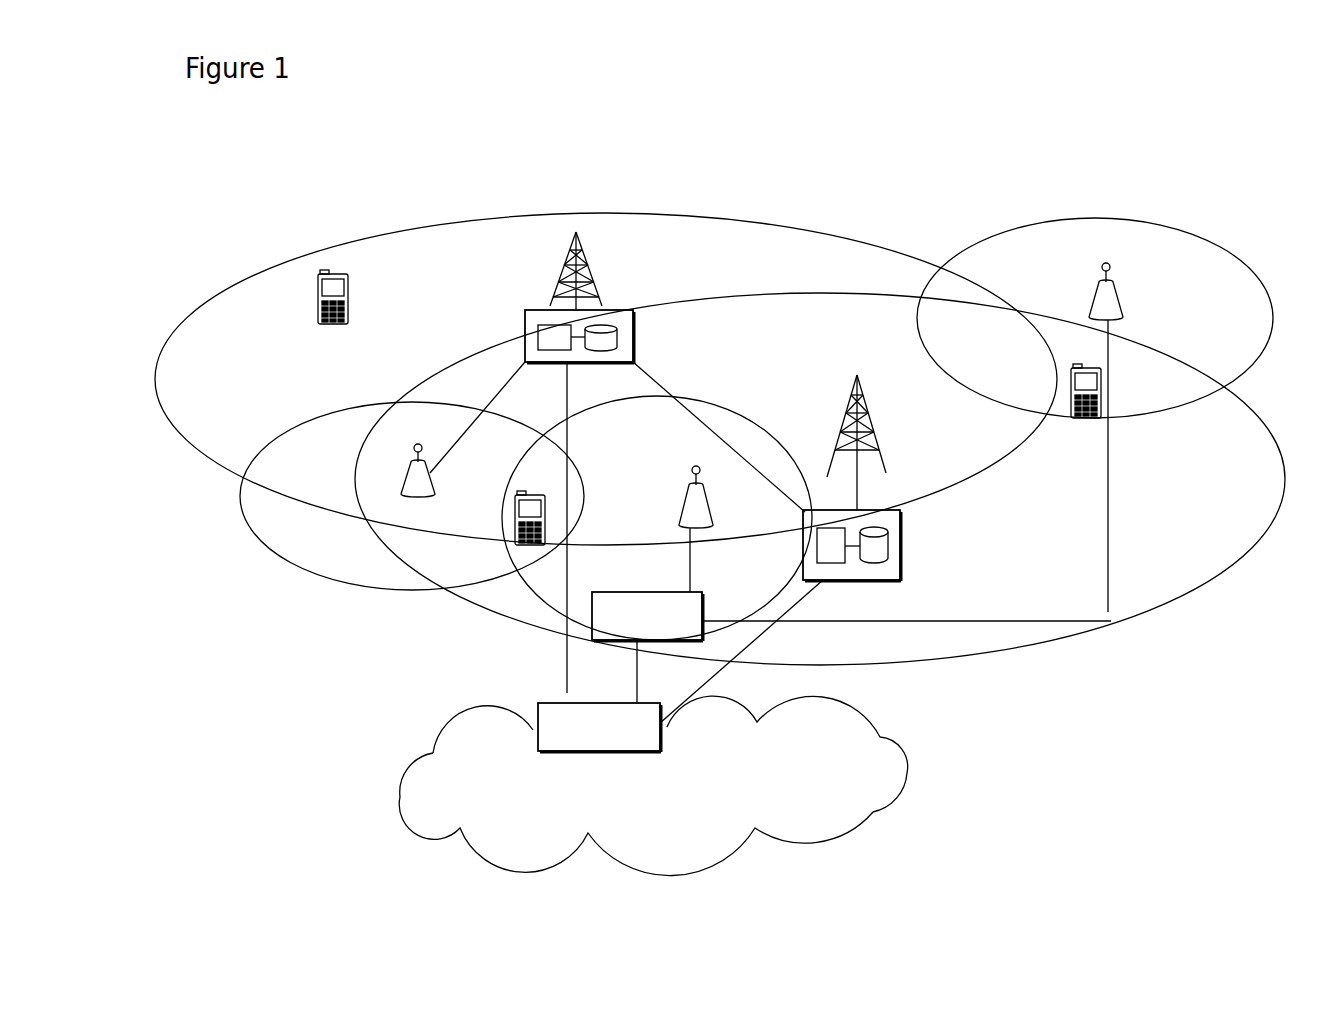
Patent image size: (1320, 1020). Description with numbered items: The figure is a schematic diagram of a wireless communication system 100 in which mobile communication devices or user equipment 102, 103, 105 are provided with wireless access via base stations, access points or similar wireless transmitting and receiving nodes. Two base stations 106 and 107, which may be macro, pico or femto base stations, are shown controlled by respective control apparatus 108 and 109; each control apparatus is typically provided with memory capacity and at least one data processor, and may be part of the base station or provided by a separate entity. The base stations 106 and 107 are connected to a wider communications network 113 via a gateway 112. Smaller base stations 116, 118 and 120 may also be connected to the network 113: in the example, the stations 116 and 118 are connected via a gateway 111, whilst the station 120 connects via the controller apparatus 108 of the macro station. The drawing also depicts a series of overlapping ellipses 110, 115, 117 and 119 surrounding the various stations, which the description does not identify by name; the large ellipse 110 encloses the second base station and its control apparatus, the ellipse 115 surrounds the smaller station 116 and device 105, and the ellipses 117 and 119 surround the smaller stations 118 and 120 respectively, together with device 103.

The wireless communication system 100 is at (246, 259).
The mobile communication device 102 is at (318, 312).
The mobile communication device 103 is at (512, 522).
The mobile communication device 105 is at (1085, 416).
The base station 106 is at (554, 278).
The base station 107 is at (880, 441).
The control apparatus 108 is at (525, 325).
The control apparatus 109 is at (892, 570).
The macro cell coverage area 110 is at (1170, 612).
The gateway 111 is at (600, 622).
The gateway 112 is at (541, 703).
The wider communications network 113 is at (463, 758).
The femto cell coverage area 115 is at (1243, 243).
The smaller base station 116 is at (1093, 295).
The access point coverage area 117 is at (752, 380).
The smaller base station 118 is at (690, 512).
The access point coverage area 119 is at (321, 570).
The smaller base station 120 is at (410, 478).